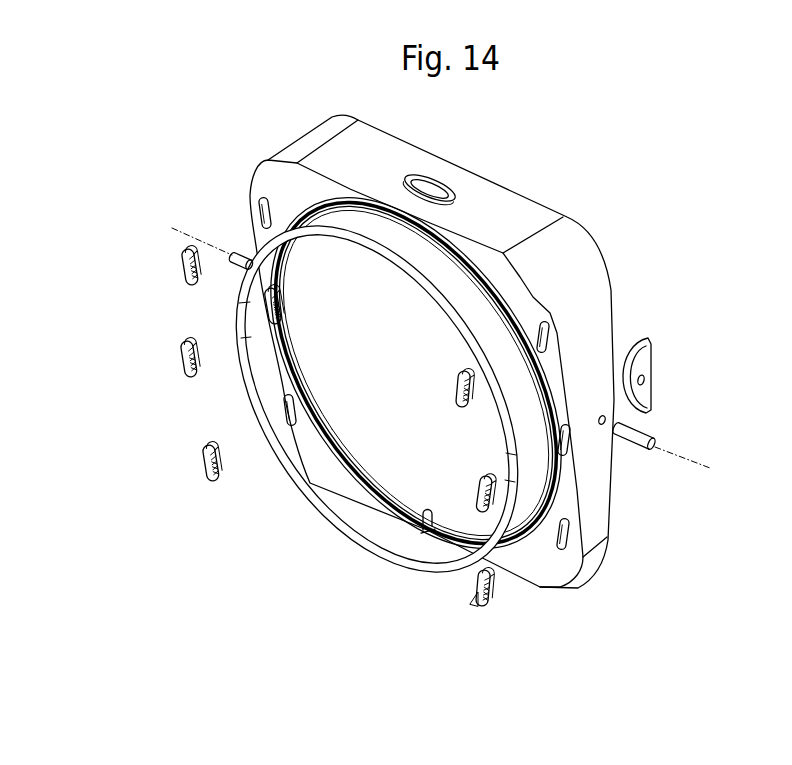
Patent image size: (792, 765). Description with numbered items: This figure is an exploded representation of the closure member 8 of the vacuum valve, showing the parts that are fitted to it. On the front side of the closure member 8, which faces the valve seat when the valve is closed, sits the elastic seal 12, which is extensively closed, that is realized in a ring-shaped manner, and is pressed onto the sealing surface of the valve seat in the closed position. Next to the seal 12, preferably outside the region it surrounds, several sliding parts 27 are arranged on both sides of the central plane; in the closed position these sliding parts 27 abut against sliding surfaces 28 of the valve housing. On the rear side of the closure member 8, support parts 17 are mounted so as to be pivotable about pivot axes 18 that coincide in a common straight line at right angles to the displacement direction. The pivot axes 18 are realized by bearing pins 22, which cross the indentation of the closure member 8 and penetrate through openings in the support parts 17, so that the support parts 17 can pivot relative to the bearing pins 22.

The closure member 8 is at (573, 262).
The elastic seal 12 is at (377, 553).
The support part 17 is at (645, 366).
The pivot axis 18 is at (198, 242).
The bearing pin 22 is at (240, 254).
The sliding part 27 is at (190, 252).
The sliding surface 28 is at (178, 371).